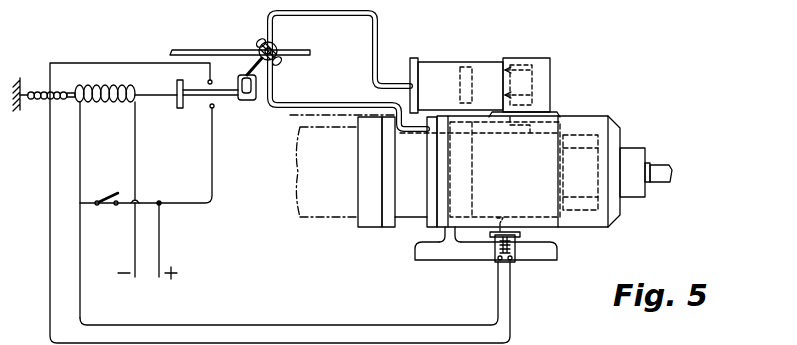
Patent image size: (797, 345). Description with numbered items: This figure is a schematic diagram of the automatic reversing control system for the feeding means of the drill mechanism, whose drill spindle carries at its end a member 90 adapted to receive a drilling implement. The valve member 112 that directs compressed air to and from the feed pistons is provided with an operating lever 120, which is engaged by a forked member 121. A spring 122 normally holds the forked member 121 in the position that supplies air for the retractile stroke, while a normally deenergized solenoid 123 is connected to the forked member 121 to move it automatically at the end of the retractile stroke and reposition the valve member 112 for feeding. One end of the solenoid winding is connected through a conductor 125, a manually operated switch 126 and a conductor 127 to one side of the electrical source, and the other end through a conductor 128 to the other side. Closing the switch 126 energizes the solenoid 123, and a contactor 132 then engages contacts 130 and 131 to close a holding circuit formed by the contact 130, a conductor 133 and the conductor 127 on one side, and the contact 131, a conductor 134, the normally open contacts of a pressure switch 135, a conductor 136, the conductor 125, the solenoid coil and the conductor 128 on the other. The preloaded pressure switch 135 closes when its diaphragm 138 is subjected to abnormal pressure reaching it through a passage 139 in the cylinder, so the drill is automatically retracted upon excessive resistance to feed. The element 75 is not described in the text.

The starter motor 75 is at (593, 116).
The member 90 is at (664, 168).
The valve member 112 is at (288, 43).
The operating lever 120 is at (256, 58).
The forked member 121 is at (249, 100).
The spring 122 is at (32, 102).
The solenoid 123 is at (76, 104).
The conductor 125 is at (80, 244).
The manually operated switch 126 is at (112, 192).
The conductor 127 is at (160, 241).
The conductor 128 is at (136, 158).
The contact 130 is at (210, 106).
The contact 131 is at (210, 80).
The contactor 132 is at (176, 100).
The conductor 133 is at (213, 175).
The conductor 134 is at (50, 253).
The pressure switch 135 is at (497, 264).
The conductor 136 is at (328, 324).
The diaphragm 138 is at (512, 260).
The passage 139 is at (502, 232).